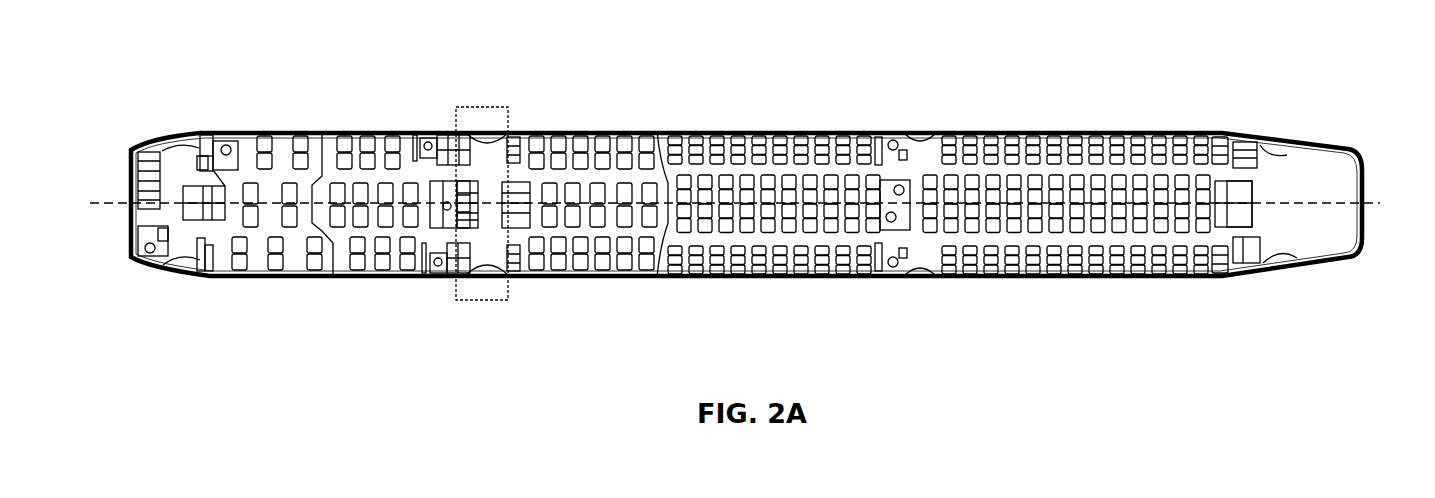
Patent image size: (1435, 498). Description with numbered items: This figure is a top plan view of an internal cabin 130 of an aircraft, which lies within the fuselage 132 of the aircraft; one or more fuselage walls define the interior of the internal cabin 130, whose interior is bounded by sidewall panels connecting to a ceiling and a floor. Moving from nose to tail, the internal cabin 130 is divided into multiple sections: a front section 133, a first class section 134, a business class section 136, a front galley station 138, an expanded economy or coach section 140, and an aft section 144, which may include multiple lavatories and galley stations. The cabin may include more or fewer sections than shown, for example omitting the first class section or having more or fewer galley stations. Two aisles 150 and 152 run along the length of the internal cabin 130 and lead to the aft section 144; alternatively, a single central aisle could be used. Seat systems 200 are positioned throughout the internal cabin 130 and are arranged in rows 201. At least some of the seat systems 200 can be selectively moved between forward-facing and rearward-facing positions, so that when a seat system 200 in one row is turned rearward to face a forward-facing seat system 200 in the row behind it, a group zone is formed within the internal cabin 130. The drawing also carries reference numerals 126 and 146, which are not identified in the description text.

The internal cabin 130 is at (268, 34).
The fuselage 132 is at (604, 58).
The cabin partition 126 is at (655, 132).
The front section 133 is at (188, 294).
The first class section 134 is at (285, 278).
The business class section 136 is at (360, 132).
The front galley station 138 is at (477, 292).
The expanded economy or coach section 140 is at (582, 278).
The aft section 144 is at (1285, 157).
The forward galley 146 is at (207, 133).
The aisle 150 is at (1077, 170).
The aisle 152 is at (1095, 240).
The seat system 200 is at (838, 135).
The row 201 is at (833, 124).